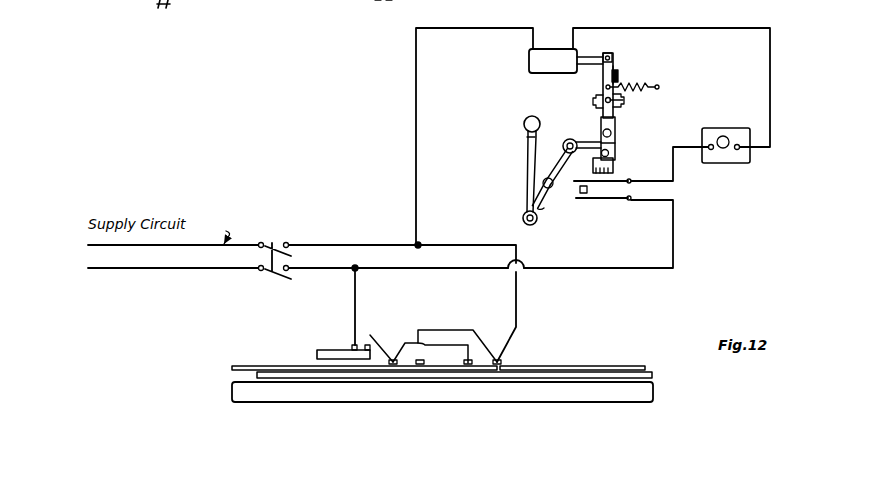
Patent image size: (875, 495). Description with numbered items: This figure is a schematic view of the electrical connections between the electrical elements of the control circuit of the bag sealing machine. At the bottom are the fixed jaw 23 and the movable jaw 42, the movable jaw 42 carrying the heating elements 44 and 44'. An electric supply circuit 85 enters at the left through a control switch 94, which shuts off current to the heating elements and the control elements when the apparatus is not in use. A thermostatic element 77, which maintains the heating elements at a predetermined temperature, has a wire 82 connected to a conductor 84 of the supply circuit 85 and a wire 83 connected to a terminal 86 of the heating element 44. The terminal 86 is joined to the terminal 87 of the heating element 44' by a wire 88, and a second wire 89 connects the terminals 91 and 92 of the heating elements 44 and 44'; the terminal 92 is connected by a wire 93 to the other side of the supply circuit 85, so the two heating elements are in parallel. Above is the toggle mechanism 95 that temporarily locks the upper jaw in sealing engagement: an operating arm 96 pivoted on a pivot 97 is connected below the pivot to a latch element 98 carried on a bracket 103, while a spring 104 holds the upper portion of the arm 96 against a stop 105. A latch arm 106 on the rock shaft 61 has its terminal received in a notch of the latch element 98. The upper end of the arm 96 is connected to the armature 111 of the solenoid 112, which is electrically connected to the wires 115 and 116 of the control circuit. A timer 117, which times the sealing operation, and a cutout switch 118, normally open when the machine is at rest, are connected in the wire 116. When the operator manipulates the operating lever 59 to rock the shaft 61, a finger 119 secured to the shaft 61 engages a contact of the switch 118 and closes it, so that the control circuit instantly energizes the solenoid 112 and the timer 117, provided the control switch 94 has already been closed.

The fixed jaw 23 is at (231, 392).
The movable jaw 42 is at (231, 375).
The heating element 44 is at (346, 360).
The heating element 44' is at (586, 354).
The operating lever 59 is at (527, 164).
The rock shaft 61 is at (544, 207).
The thermostatic element 77 is at (334, 352).
The wire 82 is at (357, 298).
The wire 83 is at (370, 335).
The conductor 84 is at (323, 271).
The electric supply circuit 85 is at (133, 260).
The terminal 86 is at (393, 364).
The terminal 87 is at (468, 369).
The wire 88 is at (445, 343).
The second wire 89 is at (466, 332).
The terminal 91 is at (420, 369).
The terminal 92 is at (503, 358).
The wire 93 is at (335, 245).
The control switch 94 is at (274, 241).
The toggle mechanism 95 is at (622, 127).
The operating arm 96 is at (614, 71).
The pivot 97 is at (624, 100).
The latch element 98 is at (616, 147).
The bracket 103 is at (614, 165).
The spring 104 is at (654, 88).
The stop 105 is at (620, 77).
The latch arm 106 is at (587, 143).
The armature 111 is at (590, 58).
The solenoid 112 is at (552, 52).
The wire 115 is at (417, 98).
The wire 116 is at (736, 28).
The timer 117 is at (729, 128).
The cutout switch 118 is at (570, 192).
The finger 119 is at (552, 178).